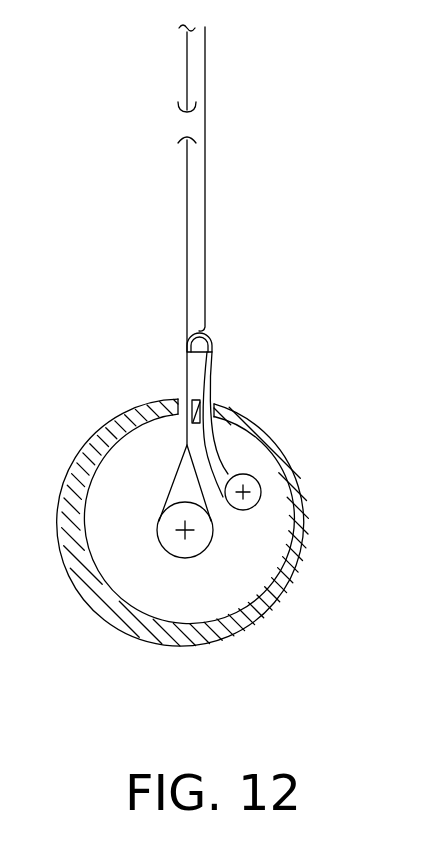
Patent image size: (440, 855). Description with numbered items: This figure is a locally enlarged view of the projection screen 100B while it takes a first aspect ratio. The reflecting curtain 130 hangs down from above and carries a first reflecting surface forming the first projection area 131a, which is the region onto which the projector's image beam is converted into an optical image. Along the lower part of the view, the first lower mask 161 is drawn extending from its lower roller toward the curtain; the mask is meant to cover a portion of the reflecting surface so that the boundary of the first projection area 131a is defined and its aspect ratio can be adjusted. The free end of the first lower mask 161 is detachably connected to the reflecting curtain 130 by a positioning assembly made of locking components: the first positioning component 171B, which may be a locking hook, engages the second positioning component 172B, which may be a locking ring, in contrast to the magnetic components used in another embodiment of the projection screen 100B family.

The projection screen 100B is at (280, 647).
The reflecting curtain 130 is at (187, 248).
The first projection area 131a is at (211, 200).
The second positioning component 172B is at (186, 108).
The first positioning component 171B is at (213, 352).
The first lower mask 161 is at (214, 458).